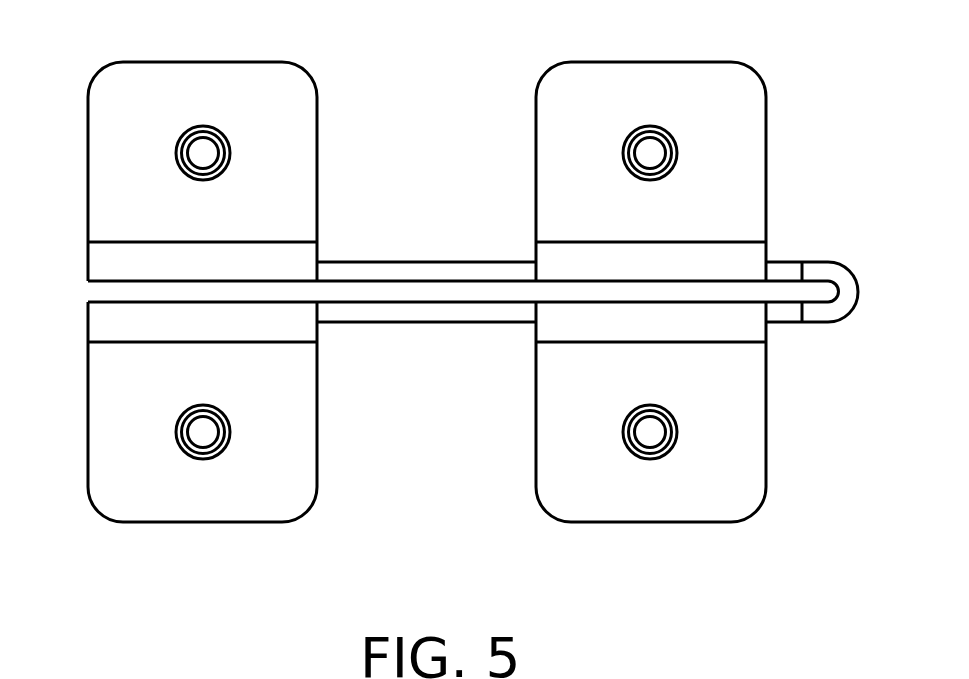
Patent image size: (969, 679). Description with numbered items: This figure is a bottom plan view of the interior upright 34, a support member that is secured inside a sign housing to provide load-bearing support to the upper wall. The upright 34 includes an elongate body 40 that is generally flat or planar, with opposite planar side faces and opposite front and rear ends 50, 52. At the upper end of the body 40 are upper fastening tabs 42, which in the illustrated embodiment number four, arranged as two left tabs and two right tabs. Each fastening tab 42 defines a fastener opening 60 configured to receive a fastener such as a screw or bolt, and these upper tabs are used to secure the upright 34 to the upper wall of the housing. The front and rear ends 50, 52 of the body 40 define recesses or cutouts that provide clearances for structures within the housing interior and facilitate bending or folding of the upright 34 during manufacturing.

The interior upright 34 is at (836, 67).
The body 40 is at (416, 322).
The upper fastening tabs 42 is at (140, 81).
The front end 50 is at (860, 288).
The rear end 52 is at (85, 317).
The fastener openings 60 is at (201, 153).